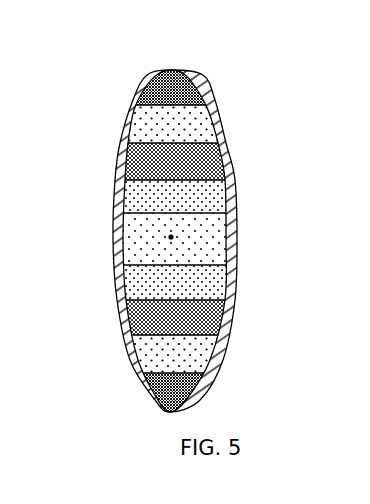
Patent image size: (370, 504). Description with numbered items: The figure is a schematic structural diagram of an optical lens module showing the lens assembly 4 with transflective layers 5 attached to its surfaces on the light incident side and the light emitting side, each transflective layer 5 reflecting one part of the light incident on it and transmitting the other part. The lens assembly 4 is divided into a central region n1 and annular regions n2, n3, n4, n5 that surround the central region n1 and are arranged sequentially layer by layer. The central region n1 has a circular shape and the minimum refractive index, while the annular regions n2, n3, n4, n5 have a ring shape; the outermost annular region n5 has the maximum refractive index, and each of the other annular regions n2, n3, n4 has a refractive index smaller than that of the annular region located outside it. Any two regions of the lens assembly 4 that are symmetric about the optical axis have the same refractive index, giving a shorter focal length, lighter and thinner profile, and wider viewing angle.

The lens assembly 4 is at (168, 71).
The transflective layer 5 is at (137, 85).
The central region n1 is at (195, 230).
The annular region n2 is at (203, 197).
The annular region n3 is at (196, 160).
The annular region n4 is at (187, 120).
The annular region n5 is at (205, 87).